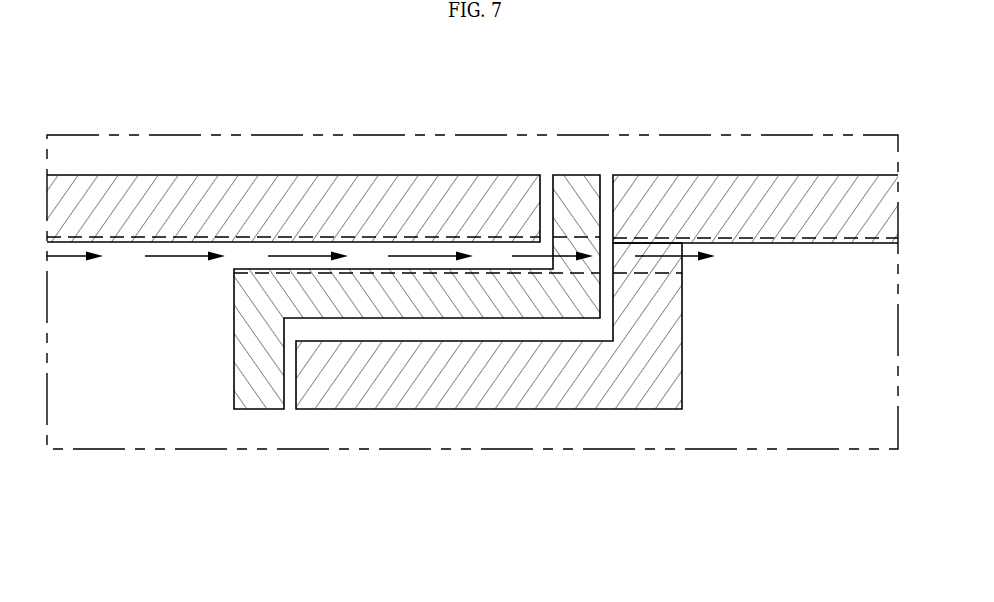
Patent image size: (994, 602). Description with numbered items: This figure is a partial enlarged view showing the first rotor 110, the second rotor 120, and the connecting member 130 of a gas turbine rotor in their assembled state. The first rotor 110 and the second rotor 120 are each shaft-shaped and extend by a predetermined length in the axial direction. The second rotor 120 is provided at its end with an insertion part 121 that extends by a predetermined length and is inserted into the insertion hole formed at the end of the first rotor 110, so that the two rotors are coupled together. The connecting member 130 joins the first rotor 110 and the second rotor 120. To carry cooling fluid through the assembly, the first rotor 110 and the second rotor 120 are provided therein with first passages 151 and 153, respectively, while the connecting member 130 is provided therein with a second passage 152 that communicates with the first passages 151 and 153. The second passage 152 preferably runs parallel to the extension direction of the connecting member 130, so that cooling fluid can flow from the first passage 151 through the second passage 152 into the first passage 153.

The first rotor 110 is at (317, 175).
The second rotor 120 is at (817, 175).
The insertion part 121 is at (548, 375).
The connecting member 130 is at (580, 175).
The first passage 151 is at (183, 244).
The second passage 152 is at (263, 275).
The first passage 153 is at (652, 274).